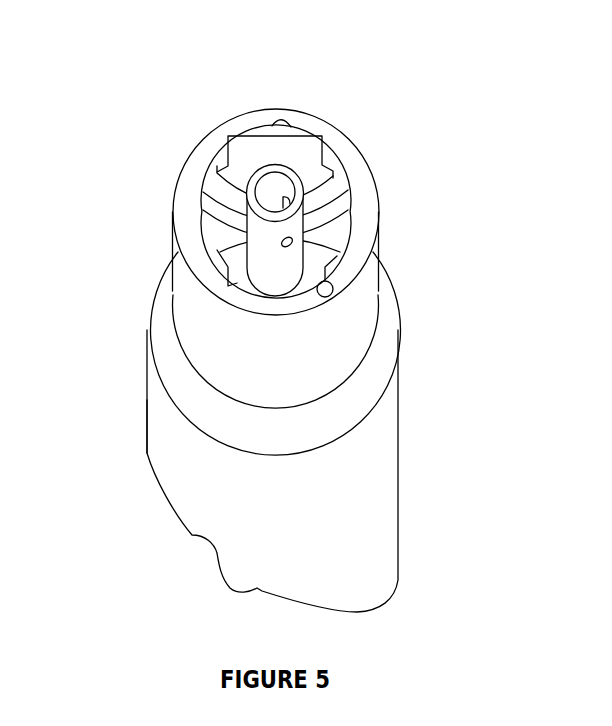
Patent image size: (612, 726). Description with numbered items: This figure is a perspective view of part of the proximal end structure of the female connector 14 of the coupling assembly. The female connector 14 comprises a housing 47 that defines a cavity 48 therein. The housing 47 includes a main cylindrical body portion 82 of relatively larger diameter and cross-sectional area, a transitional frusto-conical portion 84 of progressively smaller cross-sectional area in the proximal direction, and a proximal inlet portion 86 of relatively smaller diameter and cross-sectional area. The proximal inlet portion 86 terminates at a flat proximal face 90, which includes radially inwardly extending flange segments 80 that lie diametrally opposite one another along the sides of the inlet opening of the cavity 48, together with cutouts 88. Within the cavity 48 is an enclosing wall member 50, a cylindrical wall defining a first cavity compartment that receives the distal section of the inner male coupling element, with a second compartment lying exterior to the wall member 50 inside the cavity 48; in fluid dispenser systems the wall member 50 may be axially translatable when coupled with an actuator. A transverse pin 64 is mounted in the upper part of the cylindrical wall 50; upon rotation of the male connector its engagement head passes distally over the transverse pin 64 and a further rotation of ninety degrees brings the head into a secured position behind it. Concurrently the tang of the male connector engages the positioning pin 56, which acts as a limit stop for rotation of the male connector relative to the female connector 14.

The female connector 14 is at (273, 320).
The housing 47 is at (147, 413).
The cavity 48 is at (254, 143).
The enclosing wall member 50 is at (300, 226).
The positioning pin 56 is at (334, 292).
The transverse pin 64 is at (285, 196).
The flange segments 80 is at (215, 168).
The main cylindrical body portion 82 is at (362, 472).
The transitional frusto-conical portion 84 is at (358, 388).
The proximal inlet portion 86 is at (340, 328).
The cutouts 88 is at (292, 112).
The flat proximal face 90 is at (363, 215).